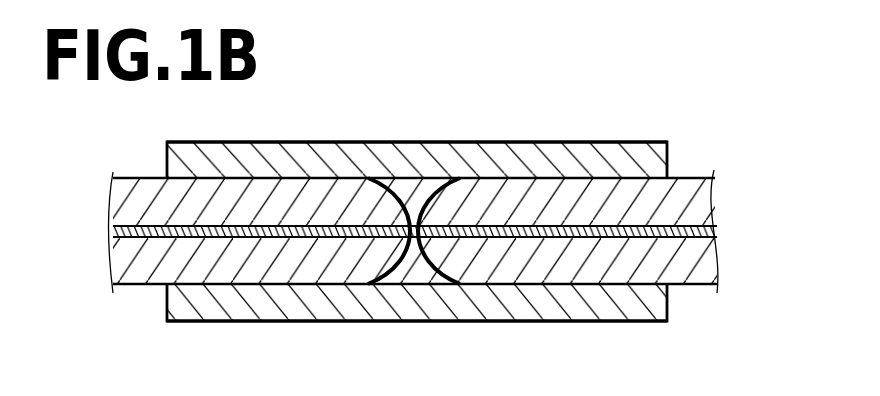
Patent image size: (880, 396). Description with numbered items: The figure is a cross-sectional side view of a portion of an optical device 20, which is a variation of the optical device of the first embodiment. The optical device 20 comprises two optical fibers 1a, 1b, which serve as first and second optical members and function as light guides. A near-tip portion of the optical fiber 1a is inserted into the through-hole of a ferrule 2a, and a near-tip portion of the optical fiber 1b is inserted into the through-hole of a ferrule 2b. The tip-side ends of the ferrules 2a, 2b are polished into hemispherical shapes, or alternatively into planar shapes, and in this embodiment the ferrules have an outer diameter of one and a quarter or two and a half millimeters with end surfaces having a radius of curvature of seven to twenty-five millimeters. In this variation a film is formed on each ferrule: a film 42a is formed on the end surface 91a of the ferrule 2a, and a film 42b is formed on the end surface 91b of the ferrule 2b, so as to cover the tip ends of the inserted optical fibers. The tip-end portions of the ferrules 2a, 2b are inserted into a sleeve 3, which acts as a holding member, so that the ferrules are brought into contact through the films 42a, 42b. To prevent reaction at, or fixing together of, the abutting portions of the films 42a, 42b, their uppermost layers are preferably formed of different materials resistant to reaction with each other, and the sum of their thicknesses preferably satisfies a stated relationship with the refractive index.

The optical device 20 is at (652, 66).
The sleeve 3 is at (438, 152).
The optical fiber 1a is at (107, 223).
The optical fiber 1b is at (690, 260).
The ferrule 2a is at (150, 273).
The ferrule 2b is at (690, 260).
The film 42a is at (387, 202).
The film 42b is at (432, 196).
The end surface 91a is at (400, 267).
The end surface 91b is at (440, 268).